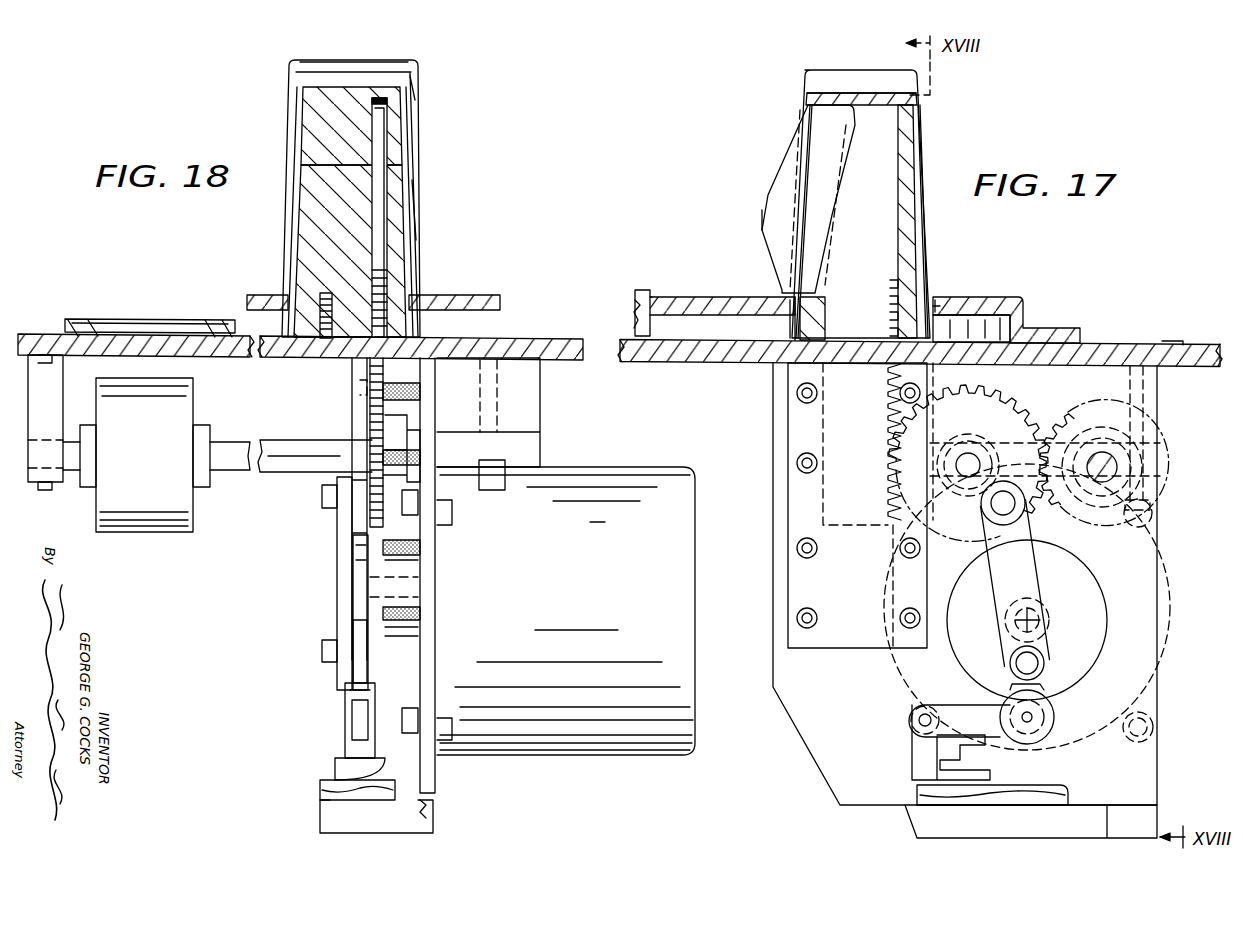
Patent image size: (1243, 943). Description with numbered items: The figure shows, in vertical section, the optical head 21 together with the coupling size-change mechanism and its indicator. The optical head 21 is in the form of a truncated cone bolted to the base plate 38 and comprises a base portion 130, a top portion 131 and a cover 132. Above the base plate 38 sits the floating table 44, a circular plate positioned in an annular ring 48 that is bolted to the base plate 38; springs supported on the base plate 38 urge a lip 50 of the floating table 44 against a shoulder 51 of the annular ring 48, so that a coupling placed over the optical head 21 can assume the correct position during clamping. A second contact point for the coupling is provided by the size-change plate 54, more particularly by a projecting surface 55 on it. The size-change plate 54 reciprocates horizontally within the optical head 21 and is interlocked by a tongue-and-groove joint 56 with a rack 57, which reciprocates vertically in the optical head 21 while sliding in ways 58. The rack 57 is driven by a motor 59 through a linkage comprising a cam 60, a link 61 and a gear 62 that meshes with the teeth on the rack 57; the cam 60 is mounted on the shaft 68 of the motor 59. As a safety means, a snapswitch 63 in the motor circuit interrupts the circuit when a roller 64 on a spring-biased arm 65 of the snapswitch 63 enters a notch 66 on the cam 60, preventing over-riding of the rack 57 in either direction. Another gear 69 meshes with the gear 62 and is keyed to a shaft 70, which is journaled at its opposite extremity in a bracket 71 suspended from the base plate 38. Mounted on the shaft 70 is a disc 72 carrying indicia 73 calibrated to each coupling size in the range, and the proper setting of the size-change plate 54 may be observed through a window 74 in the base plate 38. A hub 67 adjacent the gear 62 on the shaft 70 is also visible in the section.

In FIG. 18, the optical head 21 is at (284, 124).
In FIG. 17, the optical head 21 is at (933, 133).
In FIG. 18, the base plate 38 is at (30, 334).
In FIG. 17, the base plate 38 is at (1108, 343).
In FIG. 18, the floating table 44 is at (462, 296).
In FIG. 17, the floating table 44 is at (702, 297).
In FIG. 17, the annular ring 48 is at (1024, 302).
In FIG. 17, the lip 50 is at (1002, 296).
In FIG. 17, the shoulder 51 is at (635, 312).
In FIG. 18, the size-change plate 54 is at (380, 108).
In FIG. 17, the size-change plate 54 is at (787, 176).
In FIG. 17, the projecting surface 55 is at (762, 218).
In FIG. 17, the tongue-and-groove joint 56 is at (836, 175).
In FIG. 18, the rack 57 is at (383, 145).
In FIG. 17, the rack 57 is at (888, 228).
In FIG. 18, the ways 58 is at (352, 388).
In FIG. 17, the ways 58 is at (826, 648).
In FIG. 18, the motor 59 is at (577, 599).
In FIG. 17, the motor 59 is at (1160, 650).
In FIG. 18, the cam 60 is at (353, 592).
In FIG. 17, the cam 60 is at (1093, 590).
In FIG. 18, the link 61 is at (337, 553).
In FIG. 17, the link 61 is at (1030, 572).
In FIG. 18, the gear 62 is at (370, 418).
In FIG. 17, the gear 62 is at (1000, 395).
In FIG. 18, the snapswitch 63 is at (320, 790).
In FIG. 17, the snapswitch 63 is at (917, 796).
In FIG. 18, the roller 64 is at (345, 712).
In FIG. 17, the roller 64 is at (1052, 728).
In FIG. 17, the spring-biased arm 65 is at (960, 705).
In FIG. 18, the notch 66 is at (372, 680).
In FIG. 17, the notch 66 is at (1055, 697).
In FIG. 18, the hub 67 is at (361, 432).
In FIG. 18, the shaft 68 is at (395, 580).
In FIG. 17, the shaft 68 is at (1040, 622).
In FIG. 17, the gear 69 is at (1068, 412).
In FIG. 18, the shaft 70 is at (280, 472).
In FIG. 17, the shaft 70 is at (1104, 452).
In FIG. 18, the bracket 71 is at (60, 396).
In FIG. 18, the disc 72 is at (172, 532).
In FIG. 18, the indicia 73 is at (180, 414).
In FIG. 18, the window 74 is at (128, 320).
In FIG. 18, the base portion 130 is at (420, 212).
In FIG. 18, the top portion 131 is at (418, 102).
In FIG. 18, the cover 132 is at (418, 62).